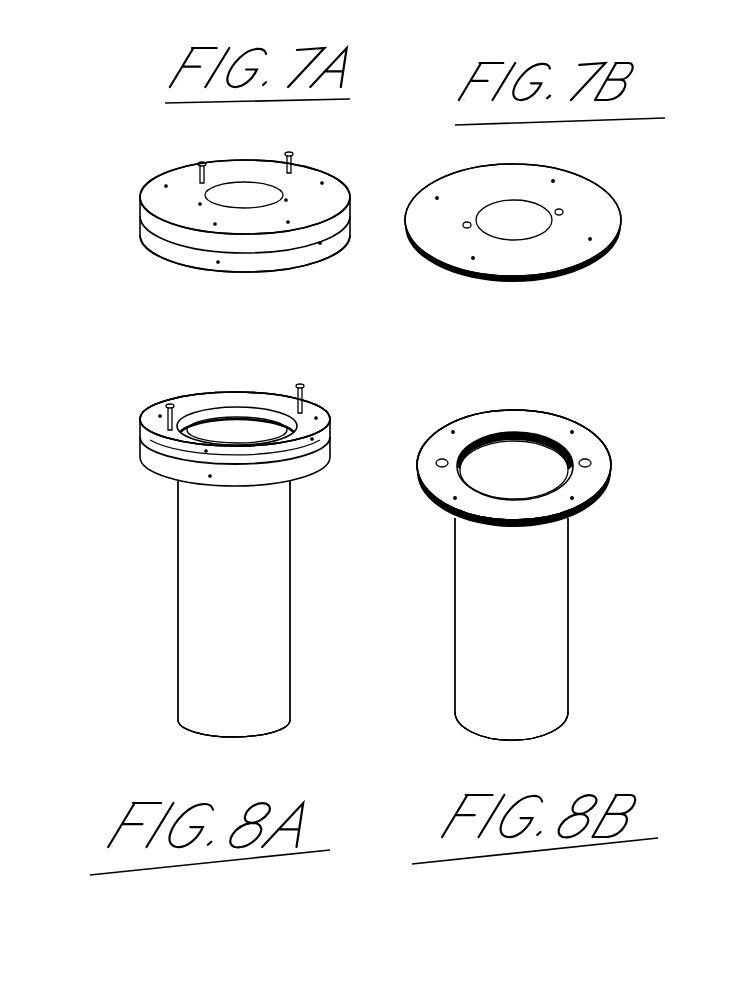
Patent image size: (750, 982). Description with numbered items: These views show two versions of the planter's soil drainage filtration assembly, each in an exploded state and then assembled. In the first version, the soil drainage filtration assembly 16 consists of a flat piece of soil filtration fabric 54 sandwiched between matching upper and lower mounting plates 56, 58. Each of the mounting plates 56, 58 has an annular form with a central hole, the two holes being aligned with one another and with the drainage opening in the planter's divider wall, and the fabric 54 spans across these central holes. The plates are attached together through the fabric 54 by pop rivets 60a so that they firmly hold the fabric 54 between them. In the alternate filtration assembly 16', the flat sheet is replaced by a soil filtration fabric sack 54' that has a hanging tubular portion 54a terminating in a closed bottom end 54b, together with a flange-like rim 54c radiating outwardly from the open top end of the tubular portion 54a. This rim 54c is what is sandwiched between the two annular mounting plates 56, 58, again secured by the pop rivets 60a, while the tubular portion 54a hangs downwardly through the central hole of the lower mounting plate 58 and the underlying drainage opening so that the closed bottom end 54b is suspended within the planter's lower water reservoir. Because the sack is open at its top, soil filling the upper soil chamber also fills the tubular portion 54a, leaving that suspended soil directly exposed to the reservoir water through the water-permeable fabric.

In FIG. 7A, the soil drainage filtration assembly 16 is at (229, 188).
In FIG. 7B, the soil drainage filtration assembly 16 is at (512, 195).
In FIG. 8A, the alternate embodiment filtration assembly 16' is at (204, 552).
In FIG. 8B, the alternate embodiment filtration assembly 16' is at (574, 572).
In FIG. 7A, the soil filtration fabric 54 is at (212, 215).
In FIG. 7B, the soil filtration fabric 54 is at (557, 189).
In FIG. 8A, the soil filtration fabric sack 54' is at (253, 564).
In FIG. 8B, the soil filtration fabric sack 54' is at (514, 544).
In FIG. 8A, the tubular portion 54a is at (273, 633).
In FIG. 8B, the tubular portion 54a is at (548, 595).
In FIG. 8A, the closed bottom end 54b is at (265, 738).
In FIG. 8B, the closed bottom end 54b is at (545, 735).
In FIG. 8A, the flange-like rim 54c is at (326, 446).
In FIG. 7A, the upper mounting plate 56 is at (305, 177).
In FIG. 7B, the upper mounting plate 56 is at (595, 205).
In FIG. 8B, the upper mounting plate 56 is at (540, 422).
In FIG. 7A, the lower mounting plate 58 is at (150, 242).
In FIG. 7B, the lower mounting plate 58 is at (575, 268).
In FIG. 8B, the lower mounting plate 58 is at (583, 508).
In FIG. 7A, the pop rivets 60a is at (203, 162).
In FIG. 7B, the pop rivets 60a is at (466, 221).
In FIG. 8A, the pop rivets 60a is at (170, 404).
In FIG. 8B, the pop rivets 60a is at (441, 458).